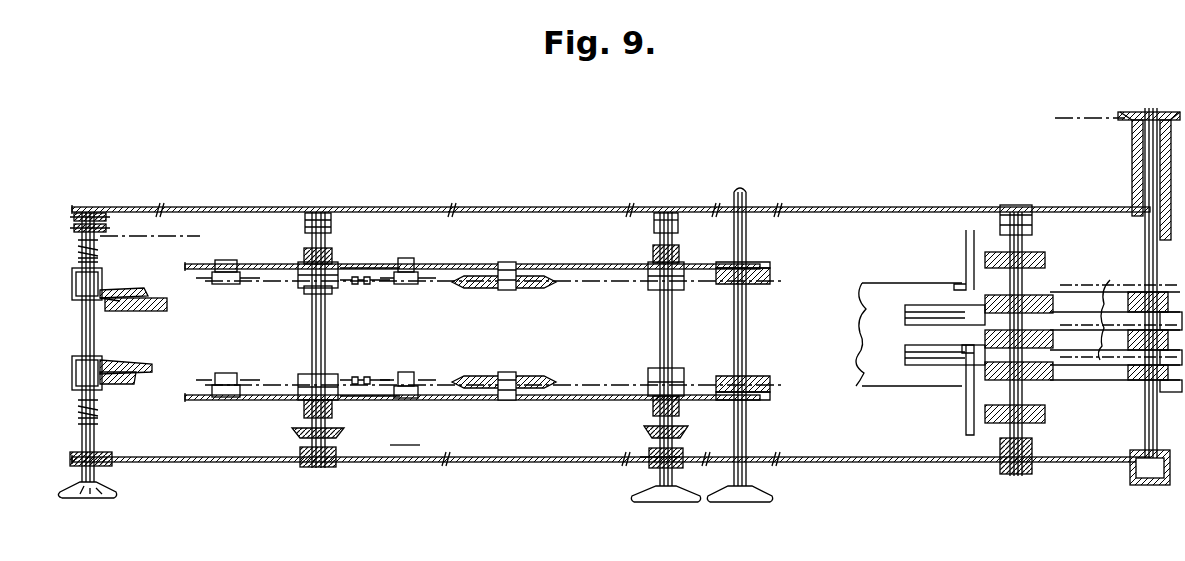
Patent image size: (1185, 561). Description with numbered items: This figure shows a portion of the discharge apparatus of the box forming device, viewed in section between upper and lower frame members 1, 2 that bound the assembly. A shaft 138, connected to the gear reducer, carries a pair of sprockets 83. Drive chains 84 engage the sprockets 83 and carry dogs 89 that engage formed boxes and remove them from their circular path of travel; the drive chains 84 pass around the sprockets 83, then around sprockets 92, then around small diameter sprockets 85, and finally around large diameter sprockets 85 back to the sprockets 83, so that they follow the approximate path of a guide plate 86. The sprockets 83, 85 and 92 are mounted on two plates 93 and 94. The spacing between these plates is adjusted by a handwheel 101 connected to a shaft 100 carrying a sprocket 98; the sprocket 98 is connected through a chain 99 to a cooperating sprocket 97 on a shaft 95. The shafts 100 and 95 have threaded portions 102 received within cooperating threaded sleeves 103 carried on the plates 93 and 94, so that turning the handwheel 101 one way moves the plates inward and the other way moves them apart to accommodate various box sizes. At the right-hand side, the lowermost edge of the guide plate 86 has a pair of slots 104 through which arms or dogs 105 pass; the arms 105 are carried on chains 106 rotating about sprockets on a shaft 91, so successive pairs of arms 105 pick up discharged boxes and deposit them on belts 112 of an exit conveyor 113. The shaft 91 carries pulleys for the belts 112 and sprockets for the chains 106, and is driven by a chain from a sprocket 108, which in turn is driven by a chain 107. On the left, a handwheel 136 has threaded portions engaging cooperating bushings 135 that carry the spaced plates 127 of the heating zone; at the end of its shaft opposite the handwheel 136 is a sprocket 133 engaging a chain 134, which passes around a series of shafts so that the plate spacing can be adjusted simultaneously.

The upper frame rail 1 is at (538, 209).
The lower frame rail 2 is at (488, 457).
The sprockets 83 is at (769, 280).
The drive chains 84 is at (354, 266).
The sprockets 85 is at (246, 284).
The guide plate 86 is at (926, 386).
The dogs 89 is at (354, 282).
The shaft 91 is at (1030, 432).
The sprockets 92 is at (424, 282).
The plate 93 is at (291, 265).
The plate 94 is at (256, 402).
The shaft 95 is at (312, 340).
The sprocket 97 is at (298, 438).
The sprocket 98 is at (688, 431).
The chain 99 is at (415, 445).
The shaft 100 is at (660, 470).
The handwheel 101 is at (660, 495).
The threaded portions 102 is at (330, 252).
The threaded sleeves 103 is at (306, 288).
The slots 104 is at (932, 302).
The arms 105 is at (906, 358).
The chains 106 is at (1088, 378).
The chain 107 is at (1071, 118).
The sprocket 108 is at (1124, 118).
The belts 112 is at (1086, 310).
The exit conveyor 113 is at (1138, 232).
The plates 127 is at (126, 301).
The sprocket 133 is at (110, 224).
The chain 134 is at (153, 234).
The bushings 135 is at (78, 288).
The handwheel 136 is at (102, 498).
The shaft 138 is at (743, 330).